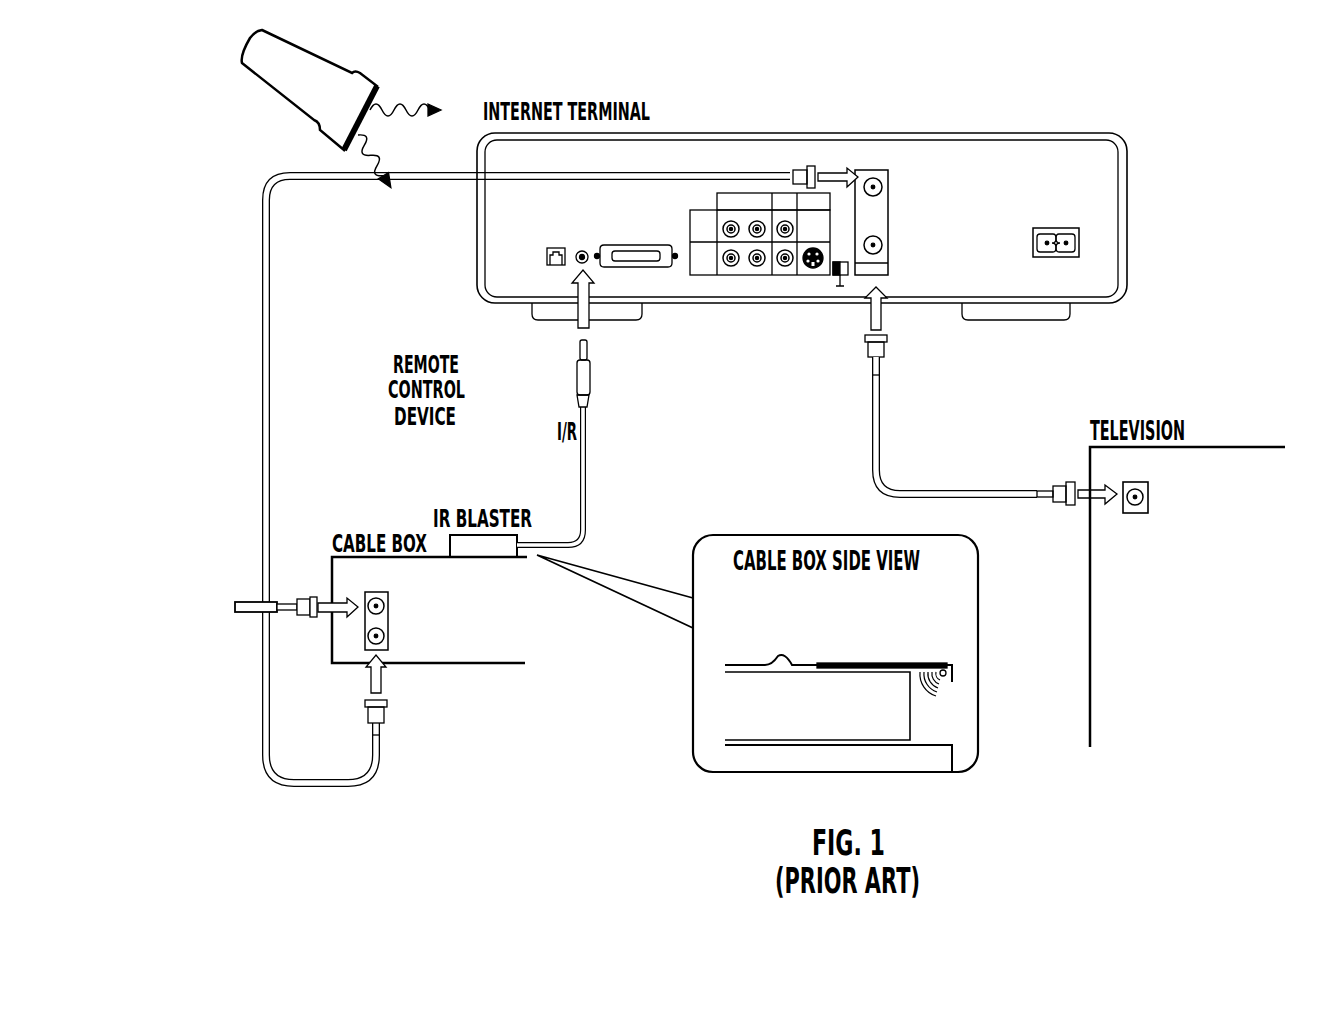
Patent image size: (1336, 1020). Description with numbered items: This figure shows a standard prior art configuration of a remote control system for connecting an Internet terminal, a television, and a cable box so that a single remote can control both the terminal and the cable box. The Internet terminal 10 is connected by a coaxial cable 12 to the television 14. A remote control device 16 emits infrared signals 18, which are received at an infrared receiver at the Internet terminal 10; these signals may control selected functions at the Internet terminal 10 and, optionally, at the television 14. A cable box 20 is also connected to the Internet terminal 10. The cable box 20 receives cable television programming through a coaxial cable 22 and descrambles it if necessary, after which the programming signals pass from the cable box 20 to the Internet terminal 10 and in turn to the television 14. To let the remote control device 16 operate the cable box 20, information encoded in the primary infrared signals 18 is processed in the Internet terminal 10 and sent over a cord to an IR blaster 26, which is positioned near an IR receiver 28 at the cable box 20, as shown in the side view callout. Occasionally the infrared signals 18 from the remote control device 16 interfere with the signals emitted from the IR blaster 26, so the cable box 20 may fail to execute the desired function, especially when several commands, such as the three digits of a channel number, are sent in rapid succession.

The Internet terminal 10 is at (1128, 132).
The coaxial cable 12 is at (878, 421).
The television 14 is at (1208, 452).
The remote control device 16 is at (280, 120).
The infrared signals 18 is at (412, 108).
The cable box 20 is at (473, 643).
The coaxial cable 22 is at (245, 612).
The IR blaster 26 is at (497, 557).
The IR receiver 28 is at (942, 695).